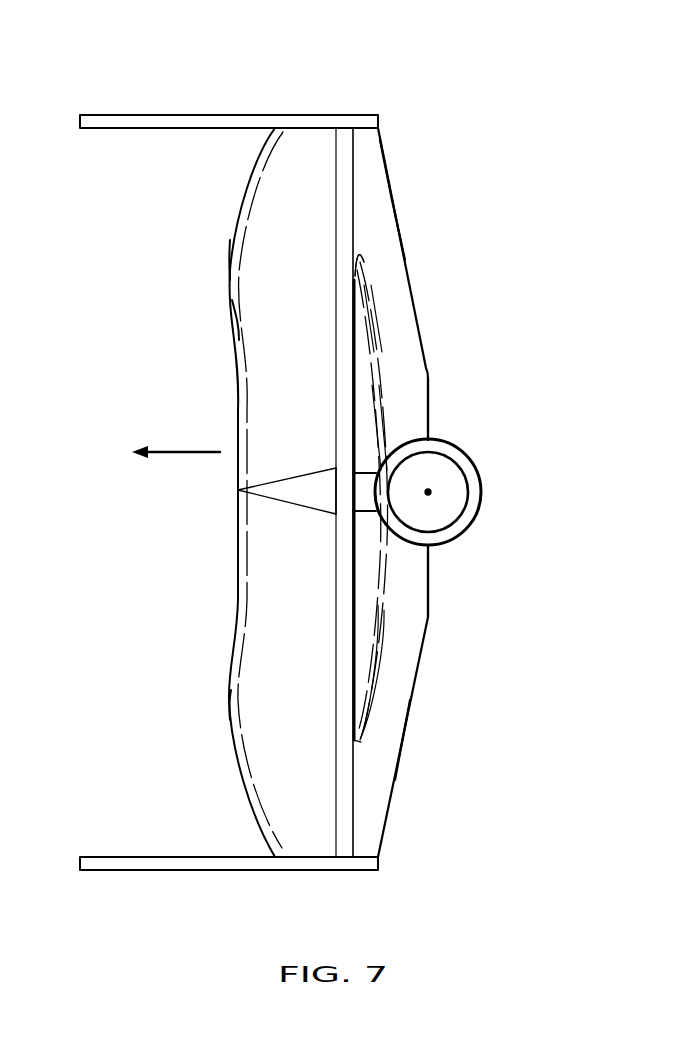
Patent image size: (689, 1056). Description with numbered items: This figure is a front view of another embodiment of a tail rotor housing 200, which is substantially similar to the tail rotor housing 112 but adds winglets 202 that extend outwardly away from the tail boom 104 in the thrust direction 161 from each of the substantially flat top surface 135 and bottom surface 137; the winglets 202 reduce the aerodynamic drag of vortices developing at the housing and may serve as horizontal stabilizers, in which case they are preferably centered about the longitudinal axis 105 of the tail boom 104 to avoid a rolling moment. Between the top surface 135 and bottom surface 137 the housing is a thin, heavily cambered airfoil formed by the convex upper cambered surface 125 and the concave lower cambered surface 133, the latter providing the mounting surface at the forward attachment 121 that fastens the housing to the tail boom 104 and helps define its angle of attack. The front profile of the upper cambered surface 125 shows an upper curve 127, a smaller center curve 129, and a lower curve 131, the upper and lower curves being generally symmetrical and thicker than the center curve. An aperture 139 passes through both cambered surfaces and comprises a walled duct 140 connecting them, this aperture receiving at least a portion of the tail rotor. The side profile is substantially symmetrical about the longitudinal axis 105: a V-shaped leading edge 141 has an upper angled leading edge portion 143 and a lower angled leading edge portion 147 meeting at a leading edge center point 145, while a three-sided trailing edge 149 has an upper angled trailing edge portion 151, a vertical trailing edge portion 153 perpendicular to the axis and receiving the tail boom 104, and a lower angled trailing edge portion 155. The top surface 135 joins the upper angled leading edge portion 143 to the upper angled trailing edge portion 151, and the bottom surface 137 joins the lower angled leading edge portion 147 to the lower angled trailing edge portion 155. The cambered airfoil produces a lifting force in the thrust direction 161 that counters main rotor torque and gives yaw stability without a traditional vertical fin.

The tail rotor housing 200 is at (460, 72).
The winglets 202 is at (128, 114).
The tail rotor housing 112 is at (222, 190).
The top surface 135 is at (318, 128).
The bottom surface 137 is at (318, 858).
The upper angled trailing edge portion 151 is at (391, 166).
The lower cambered surface 133 is at (389, 208).
The upper curve 127 is at (231, 262).
The upper cambered surface 125 is at (252, 318).
The leading edge 141 is at (352, 268).
The upper angled leading edge portion 143 is at (318, 328).
The aperture 139 is at (366, 370).
The walled duct 140 is at (365, 402).
The trailing edge 149 is at (434, 417).
The thrust direction 161 is at (178, 450).
The leading edge center point 145 is at (340, 490).
The longitudinal axis 105 is at (433, 491).
The center curve 129 is at (237, 490).
The tail boom 104 is at (476, 514).
The forward attachment 121 is at (364, 518).
The vertical trailing edge portion 153 is at (430, 580).
The lower angled leading edge portion 147 is at (318, 656).
The lower curve 131 is at (229, 710).
The lower angled trailing edge portion 155 is at (400, 776).